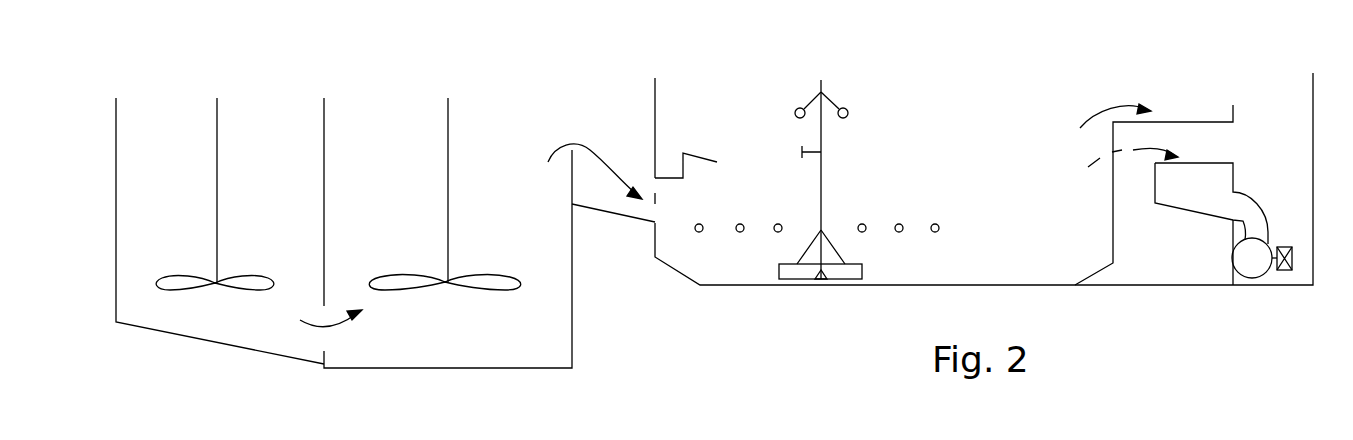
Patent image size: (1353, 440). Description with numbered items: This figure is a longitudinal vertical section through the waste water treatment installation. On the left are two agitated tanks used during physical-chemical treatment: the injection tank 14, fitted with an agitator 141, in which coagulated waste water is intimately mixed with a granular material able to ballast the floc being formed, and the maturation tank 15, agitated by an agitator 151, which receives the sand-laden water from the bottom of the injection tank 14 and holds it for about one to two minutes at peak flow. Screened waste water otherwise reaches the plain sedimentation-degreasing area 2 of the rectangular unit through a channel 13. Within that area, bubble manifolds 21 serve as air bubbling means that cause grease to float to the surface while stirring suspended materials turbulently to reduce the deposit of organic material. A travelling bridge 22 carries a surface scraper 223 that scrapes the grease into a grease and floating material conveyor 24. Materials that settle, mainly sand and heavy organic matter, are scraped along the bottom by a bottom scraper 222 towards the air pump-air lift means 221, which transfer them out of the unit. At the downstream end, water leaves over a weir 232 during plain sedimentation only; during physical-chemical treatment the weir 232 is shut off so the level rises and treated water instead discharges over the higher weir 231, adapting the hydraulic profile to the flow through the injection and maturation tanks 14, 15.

The plain sedimentation-degreasing area 2 is at (1013, 205).
The channel 13 is at (641, 170).
The injection tank 14 is at (282, 172).
The agitator 141 is at (217, 218).
The maturation tank 15 is at (508, 172).
The agitator 151 is at (448, 242).
The bubble manifolds 21 is at (705, 222).
The travelling bridge 22 is at (823, 83).
The air pump-air lift means 221 is at (823, 172).
The scraper 222 is at (862, 272).
The scraper 223 is at (802, 150).
The grease and floating material conveyor 24 is at (668, 168).
The weir 231 is at (1196, 117).
The weir 232 is at (1212, 178).